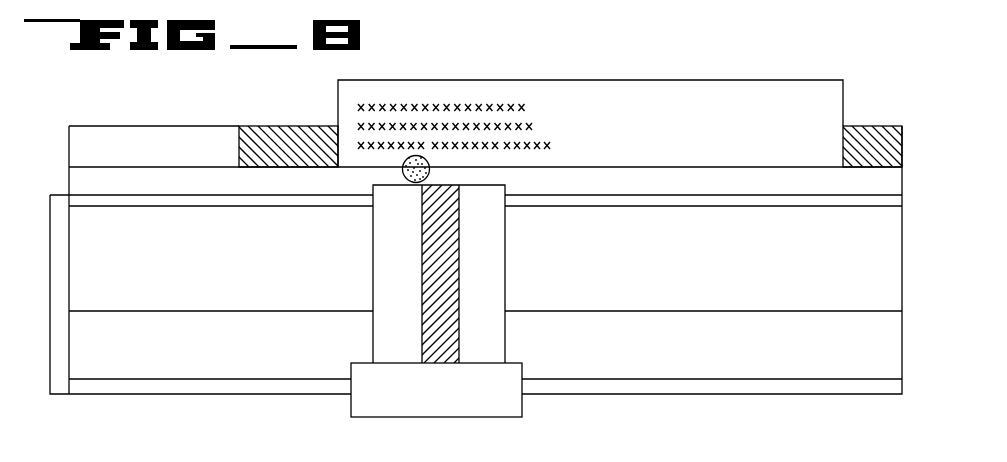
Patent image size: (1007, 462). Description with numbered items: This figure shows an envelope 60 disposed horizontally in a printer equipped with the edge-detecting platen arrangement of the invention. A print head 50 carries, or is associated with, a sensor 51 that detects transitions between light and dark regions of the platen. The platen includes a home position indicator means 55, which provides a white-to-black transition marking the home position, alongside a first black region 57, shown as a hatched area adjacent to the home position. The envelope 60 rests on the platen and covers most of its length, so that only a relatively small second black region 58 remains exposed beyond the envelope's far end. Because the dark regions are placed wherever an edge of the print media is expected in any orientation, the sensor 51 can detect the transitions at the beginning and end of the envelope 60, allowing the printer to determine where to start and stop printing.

The print head 50 is at (498, 330).
The sensor 51 is at (405, 178).
The home position indicator means 55 is at (238, 145).
The black region 57 is at (281, 137).
The second black region 58 is at (873, 137).
The envelope 60 is at (346, 96).